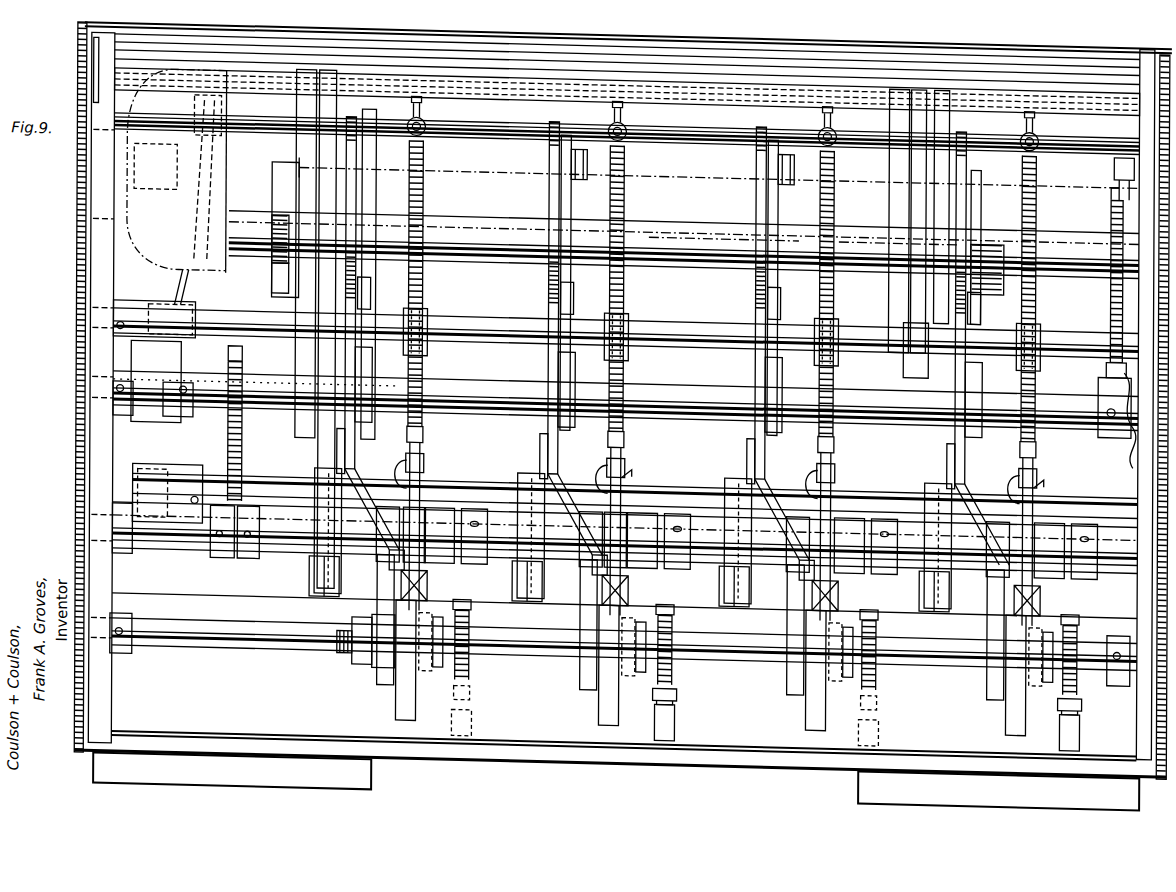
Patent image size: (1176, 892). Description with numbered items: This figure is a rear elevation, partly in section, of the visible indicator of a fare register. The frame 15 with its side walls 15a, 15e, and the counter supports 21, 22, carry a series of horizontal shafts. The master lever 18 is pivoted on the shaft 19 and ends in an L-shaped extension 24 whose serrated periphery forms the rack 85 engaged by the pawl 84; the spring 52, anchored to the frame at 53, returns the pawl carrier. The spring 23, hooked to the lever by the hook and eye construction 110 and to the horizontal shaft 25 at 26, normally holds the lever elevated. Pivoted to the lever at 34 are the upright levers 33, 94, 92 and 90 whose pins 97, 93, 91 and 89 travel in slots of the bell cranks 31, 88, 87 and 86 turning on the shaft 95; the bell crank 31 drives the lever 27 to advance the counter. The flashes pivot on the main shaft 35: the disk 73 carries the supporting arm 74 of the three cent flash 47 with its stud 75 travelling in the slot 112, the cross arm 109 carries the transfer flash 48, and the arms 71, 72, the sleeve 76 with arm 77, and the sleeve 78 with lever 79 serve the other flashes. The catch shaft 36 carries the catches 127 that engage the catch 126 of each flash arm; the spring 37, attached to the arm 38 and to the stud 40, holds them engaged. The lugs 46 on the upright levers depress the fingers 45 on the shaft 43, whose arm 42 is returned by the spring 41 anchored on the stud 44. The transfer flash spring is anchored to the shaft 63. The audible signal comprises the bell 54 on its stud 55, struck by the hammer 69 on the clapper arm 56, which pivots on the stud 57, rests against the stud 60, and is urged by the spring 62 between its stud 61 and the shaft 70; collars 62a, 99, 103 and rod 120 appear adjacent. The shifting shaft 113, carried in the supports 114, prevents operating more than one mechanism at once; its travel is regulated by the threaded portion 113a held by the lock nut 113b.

The frame base 15 is at (208, 735).
The left side wall 15a is at (80, 162).
The right side wall 15e is at (1160, 444).
The master lever 18 is at (426, 450).
The shaft 19 is at (246, 616).
The support 21 is at (200, 590).
The support 22 is at (290, 388).
The spring 23 is at (426, 275).
The L-shaped extension 24 is at (416, 438).
The horizontal shaft 25 is at (92, 55).
The attachment point 26 is at (424, 92).
The lever 27 is at (318, 558).
The bell crank 31 is at (338, 555).
The vertical shifting lever 33 is at (968, 470).
The pivot point 34 is at (380, 572).
The main shaft 35 is at (465, 225).
The catch shaft 36 is at (484, 305).
The spring 37 is at (1110, 200).
The projecting arm 38 is at (1100, 343).
The stud 40 is at (1115, 148).
The spring 41 is at (1100, 360).
The extending arm 42 is at (1128, 405).
The shaft 43 is at (676, 385).
The stud 44 is at (1125, 130).
The finger 45 is at (368, 366).
The lug 46 is at (570, 288).
The three cent flash 47 is at (688, 162).
The transfer flash 48 is at (300, 90).
The spring 52 is at (474, 655).
The attachment point 53 is at (478, 710).
The bell 54 is at (205, 102).
The stud 55 is at (170, 185).
The clapper arm 56 is at (192, 272).
The stud 57 is at (156, 368).
The stud 60 is at (200, 314).
The stud 61 is at (232, 320).
The spring 62 is at (258, 400).
The collar 62a is at (232, 553).
The shaft 63 is at (280, 140).
The hammer 69 is at (195, 104).
The shaft 70 is at (288, 530).
The supporting arm 71 is at (326, 100).
The supporting arm 72 is at (372, 104).
The disk 73 is at (275, 200).
The supporting arm 74 is at (273, 206).
The stud 75 is at (548, 150).
The sleeve 76 is at (848, 218).
The arm 77 is at (777, 192).
The sleeve 78 is at (660, 218).
The lever 79 is at (568, 196).
The pawl 84 is at (430, 530).
The rack 85 is at (400, 462).
The bell crank 86 is at (336, 428).
The bell crank 87 is at (540, 428).
The bell crank 88 is at (746, 428).
The pin 89 is at (338, 448).
The vertical lever 90 is at (360, 470).
The pin 91 is at (545, 440).
The lever 92 is at (560, 475).
The pin 93 is at (748, 440).
The lever 94 is at (768, 475).
The shaft 95 is at (280, 478).
The pin 97 is at (947, 436).
The collar 99 is at (140, 436).
The box 103 is at (185, 460).
The cross arm 109 is at (945, 96).
The hook and eye construction 110 is at (636, 458).
The slot 112 is at (548, 186).
The shifting shaft 113 is at (515, 628).
The threaded portion 113a is at (340, 640).
The lock nut 113b is at (362, 655).
The support 114 is at (535, 740).
The rod 120 is at (84, 20).
The catch 126 is at (282, 258).
The catch 127 is at (408, 298).